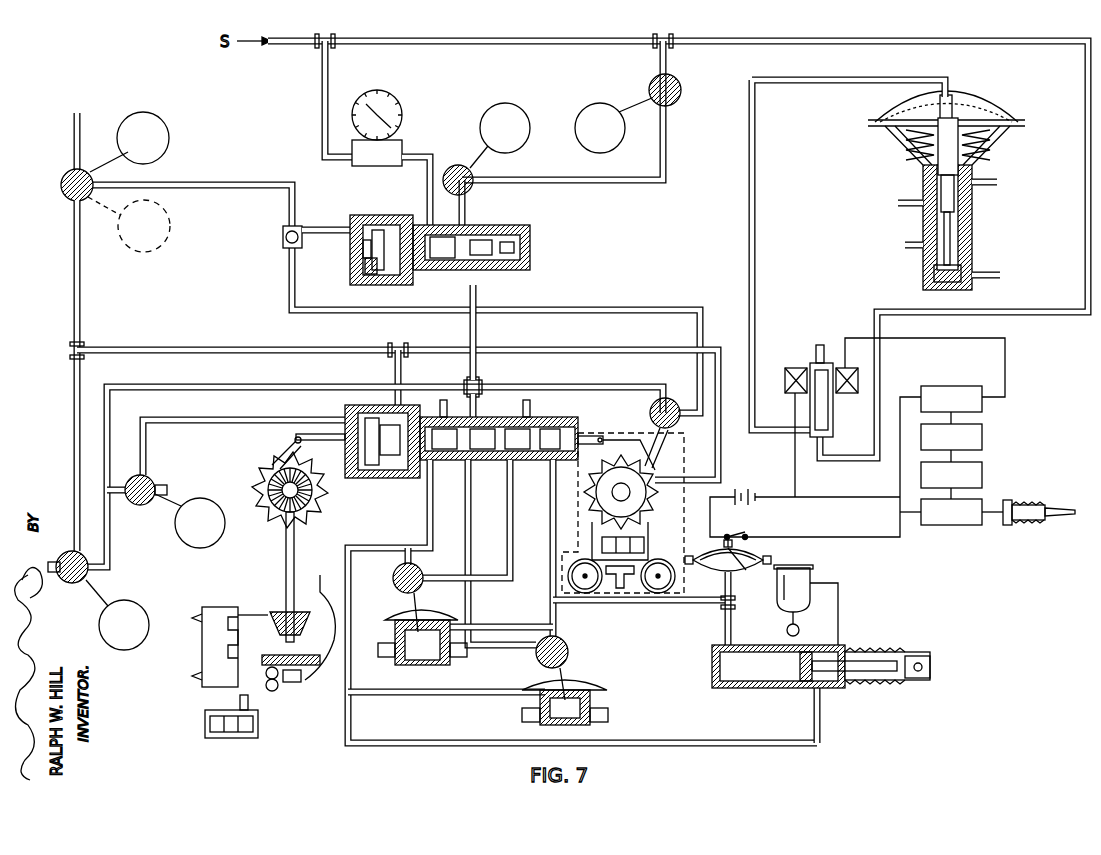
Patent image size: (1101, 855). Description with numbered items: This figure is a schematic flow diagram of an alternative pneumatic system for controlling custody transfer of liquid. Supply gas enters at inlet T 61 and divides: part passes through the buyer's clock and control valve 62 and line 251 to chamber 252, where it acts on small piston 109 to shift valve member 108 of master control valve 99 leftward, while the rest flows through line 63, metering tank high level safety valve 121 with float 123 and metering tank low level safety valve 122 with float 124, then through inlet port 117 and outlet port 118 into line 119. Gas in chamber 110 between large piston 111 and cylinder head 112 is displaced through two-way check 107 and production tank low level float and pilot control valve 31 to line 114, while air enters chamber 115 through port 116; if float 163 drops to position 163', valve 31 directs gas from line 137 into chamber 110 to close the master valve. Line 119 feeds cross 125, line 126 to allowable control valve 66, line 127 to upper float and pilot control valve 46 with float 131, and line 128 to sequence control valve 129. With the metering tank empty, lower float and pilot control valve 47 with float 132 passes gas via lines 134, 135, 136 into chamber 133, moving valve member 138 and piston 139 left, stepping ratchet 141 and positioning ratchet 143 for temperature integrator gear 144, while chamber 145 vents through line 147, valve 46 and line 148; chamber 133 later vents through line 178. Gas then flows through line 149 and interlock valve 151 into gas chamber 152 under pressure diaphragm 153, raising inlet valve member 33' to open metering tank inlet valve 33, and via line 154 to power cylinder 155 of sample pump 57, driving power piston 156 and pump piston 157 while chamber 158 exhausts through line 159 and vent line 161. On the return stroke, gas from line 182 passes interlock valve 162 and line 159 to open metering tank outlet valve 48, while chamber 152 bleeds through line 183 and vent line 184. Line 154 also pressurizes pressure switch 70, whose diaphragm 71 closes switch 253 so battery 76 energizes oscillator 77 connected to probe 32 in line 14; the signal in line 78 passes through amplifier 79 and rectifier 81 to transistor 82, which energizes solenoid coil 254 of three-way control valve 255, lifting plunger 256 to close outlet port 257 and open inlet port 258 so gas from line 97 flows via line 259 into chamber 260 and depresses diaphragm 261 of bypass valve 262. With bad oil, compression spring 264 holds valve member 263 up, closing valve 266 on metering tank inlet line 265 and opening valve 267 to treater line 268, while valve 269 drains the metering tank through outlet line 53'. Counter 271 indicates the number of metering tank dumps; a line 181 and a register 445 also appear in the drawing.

The inlet T 61 is at (332, 37).
The line 63 is at (492, 38).
The line 97 is at (985, 38).
The buyer's clock and control valve 62 is at (382, 93).
The float 124 is at (494, 105).
The float 123 is at (584, 105).
The metering tank high level safety valve 121 is at (679, 84).
The chamber 260 is at (968, 104).
The bypass valve 262 is at (1005, 108).
The diaphragm 261 is at (915, 110).
The compression spring 264 is at (892, 136).
The valve member 263 is at (920, 166).
The valve 269 is at (940, 184).
The metering tank outlet line 53' is at (1009, 165).
The treater line 268 is at (896, 206).
The valve 267 is at (966, 222).
The line 14 is at (904, 245).
The metering tank inlet line 265 is at (986, 272).
The valve 266 is at (962, 284).
The line 114 is at (70, 128).
The float 163 is at (163, 138).
The production tank low level float and pilot control valve 31 is at (64, 180).
The line 137 is at (70, 218).
The lower position of float 163' is at (163, 226).
The two-way check valve 107 is at (283, 225).
The master control valve 99 is at (356, 214).
The valve member 108 is at (388, 228).
The small piston 109 is at (428, 225).
The chamber 115 is at (358, 226).
The cylinder head 112 is at (350, 246).
The chamber 110 is at (354, 265).
The large piston 111 is at (354, 283).
The line 251 is at (434, 182).
The metering tank low level safety valve 122 is at (474, 176).
The inlet port 117 is at (470, 232).
The port 116 is at (414, 284).
The chamber 252 is at (435, 276).
The outlet port 118 is at (482, 278).
The line 119 is at (478, 340).
The pipe 181 is at (586, 350).
The line 259 is at (758, 263).
The three-way control valve 255 is at (818, 348).
The outlet port 257 is at (814, 348).
The solenoid coil 254 is at (800, 368).
The plunger 256 is at (830, 416).
The line 135 is at (236, 348).
The line 136 is at (410, 370).
The cross 125 is at (484, 384).
The line 126 is at (578, 385).
The line 134 is at (70, 380).
The line 127 is at (284, 384).
The chamber 133 is at (350, 410).
The vent line 161 is at (441, 412).
The line 128 is at (478, 406).
The vent line 184 is at (532, 412).
The sequence control valve 129 is at (568, 426).
The ratchet 141 is at (610, 445).
The allowable control valve 66 is at (676, 426).
The line 147 is at (280, 418).
The chamber 145 is at (294, 437).
The ratchet 143 is at (260, 458).
The upper float and pilot control valve 46 is at (152, 482).
The line 148 is at (168, 491).
The line 178 is at (58, 553).
The temperature integrator gear 144 is at (270, 524).
The float 131 is at (190, 546).
The piston 139 is at (360, 480).
The sequence control valve member 138 is at (392, 464).
The line 159 is at (426, 522).
The line 149 is at (464, 542).
The line 182 is at (506, 540).
The counter 271 is at (646, 545).
The battery 76 is at (746, 492).
The inlet port 258 is at (818, 445).
The transistor 82 is at (985, 407).
The rectifier 81 is at (985, 440).
The amplifier 79 is at (985, 474).
The line 78 is at (985, 505).
The probe 32 is at (1038, 504).
The oscillator 77 is at (900, 517).
The single pole single throw switch 253 is at (736, 538).
The lower float and pilot control valve 47 is at (86, 576).
The float 132 is at (146, 608).
The interlock valve 162 is at (421, 580).
The inlet valve member 33' is at (443, 605).
The pressure diaphragm 153 is at (400, 614).
The gas chamber 152 is at (398, 628).
The metering tank inlet valve 33 is at (465, 636).
The line 183 is at (548, 586).
The interlock valve 151 is at (568, 650).
The line 154 is at (630, 606).
The pressure switch 70 is at (718, 578).
The diaphragm 71 is at (740, 574).
The metering tank outlet valve 48 is at (596, 710).
The pump piston 157 is at (893, 652).
The power piston 156 is at (798, 668).
The power cylinder 155 is at (754, 690).
The sample pump 57 is at (803, 692).
The chamber 158 is at (822, 686).
The counter 445 is at (263, 656).